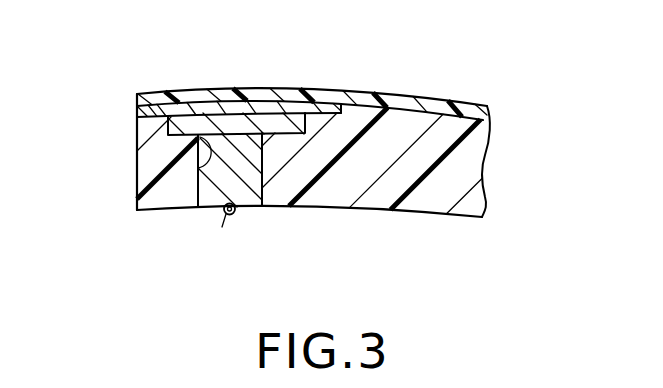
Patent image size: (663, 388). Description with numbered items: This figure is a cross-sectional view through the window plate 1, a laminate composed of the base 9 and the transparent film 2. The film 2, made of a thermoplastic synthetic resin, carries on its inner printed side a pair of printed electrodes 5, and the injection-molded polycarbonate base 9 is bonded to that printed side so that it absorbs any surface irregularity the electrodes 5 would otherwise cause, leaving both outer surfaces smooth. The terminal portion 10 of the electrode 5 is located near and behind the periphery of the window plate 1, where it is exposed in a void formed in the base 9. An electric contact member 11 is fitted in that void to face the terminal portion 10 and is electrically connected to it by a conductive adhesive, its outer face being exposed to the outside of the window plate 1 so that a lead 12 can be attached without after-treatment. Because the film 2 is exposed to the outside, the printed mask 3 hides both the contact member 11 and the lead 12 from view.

The window plate 1 is at (446, 84).
The transparent film 2 is at (333, 98).
The printed mask 3 is at (188, 111).
The electrode 5 is at (245, 125).
The base 9 is at (430, 197).
The terminal portion 10 is at (198, 168).
The electric contact member 11 is at (208, 190).
The lead 12 is at (200, 268).